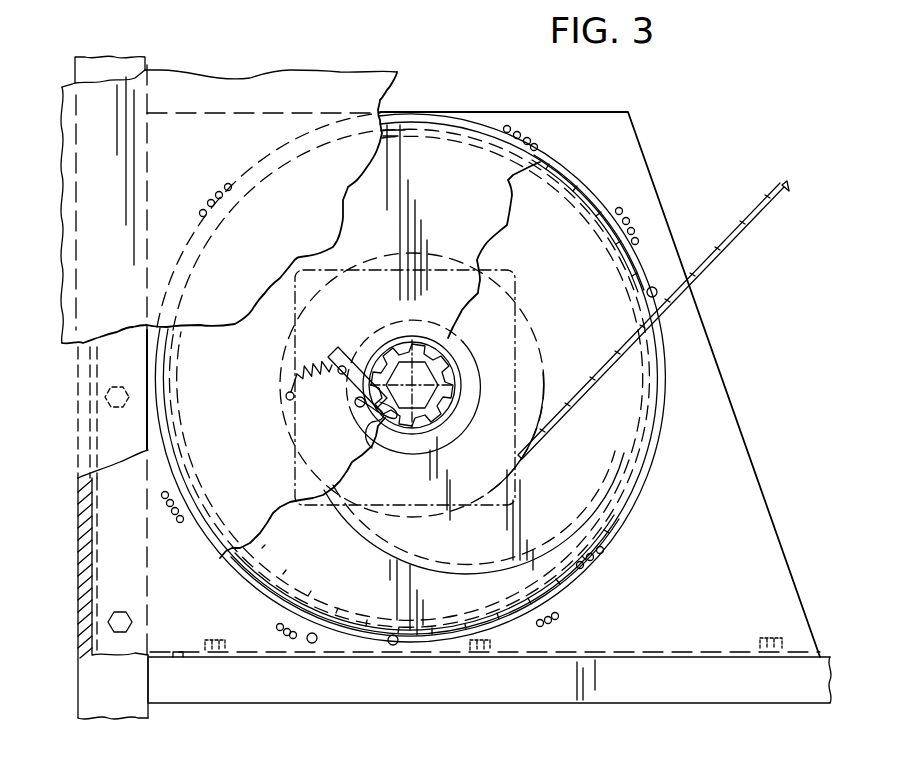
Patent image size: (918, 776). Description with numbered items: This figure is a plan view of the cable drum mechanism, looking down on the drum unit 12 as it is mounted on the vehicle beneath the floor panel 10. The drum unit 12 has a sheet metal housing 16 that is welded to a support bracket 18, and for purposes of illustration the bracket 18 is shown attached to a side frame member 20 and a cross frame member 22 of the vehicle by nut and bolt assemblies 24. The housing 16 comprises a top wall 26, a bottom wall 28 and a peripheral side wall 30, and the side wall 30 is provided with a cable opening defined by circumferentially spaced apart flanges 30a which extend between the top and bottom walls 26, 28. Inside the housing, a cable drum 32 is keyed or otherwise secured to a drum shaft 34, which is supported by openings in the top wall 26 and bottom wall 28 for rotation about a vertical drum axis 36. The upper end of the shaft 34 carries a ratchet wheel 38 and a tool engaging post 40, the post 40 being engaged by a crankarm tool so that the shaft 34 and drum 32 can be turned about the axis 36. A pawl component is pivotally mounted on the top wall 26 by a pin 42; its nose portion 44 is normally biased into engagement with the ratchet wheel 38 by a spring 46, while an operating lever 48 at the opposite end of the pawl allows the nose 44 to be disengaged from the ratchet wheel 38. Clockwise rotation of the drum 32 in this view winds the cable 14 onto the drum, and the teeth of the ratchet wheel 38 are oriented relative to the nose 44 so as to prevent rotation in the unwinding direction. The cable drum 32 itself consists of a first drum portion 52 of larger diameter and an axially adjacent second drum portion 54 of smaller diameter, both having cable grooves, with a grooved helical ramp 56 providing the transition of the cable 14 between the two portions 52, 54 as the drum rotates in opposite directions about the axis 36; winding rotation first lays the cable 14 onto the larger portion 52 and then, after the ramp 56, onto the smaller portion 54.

The floor panel 10 is at (257, 84).
The drum unit 12 is at (470, 112).
The cable 14 is at (765, 203).
The sheet metal housing 16 is at (310, 633).
The support bracket 18 is at (195, 625).
The side frame member 20 is at (115, 725).
The cross frame member 22 is at (455, 690).
The nut and bolt assemblies 24 is at (122, 612).
The top wall 26 is at (430, 155).
The bottom wall 28 is at (658, 476).
The peripheral side wall 30 is at (588, 200).
The flanges 30a is at (655, 293).
The cable drum 32 is at (655, 403).
The drum shaft 34 is at (466, 398).
The vertical drum axis 36 is at (452, 376).
The ratchet wheel 38 is at (440, 440).
The tool engaging post 40 is at (434, 345).
The pin 42 is at (350, 410).
The nose portion 44 is at (372, 422).
The spring 46 is at (297, 367).
The operating lever 48 is at (343, 364).
The first drum portion 52 is at (393, 636).
The second drum portion 54 is at (540, 347).
The grooved helical ramp 56 is at (368, 548).